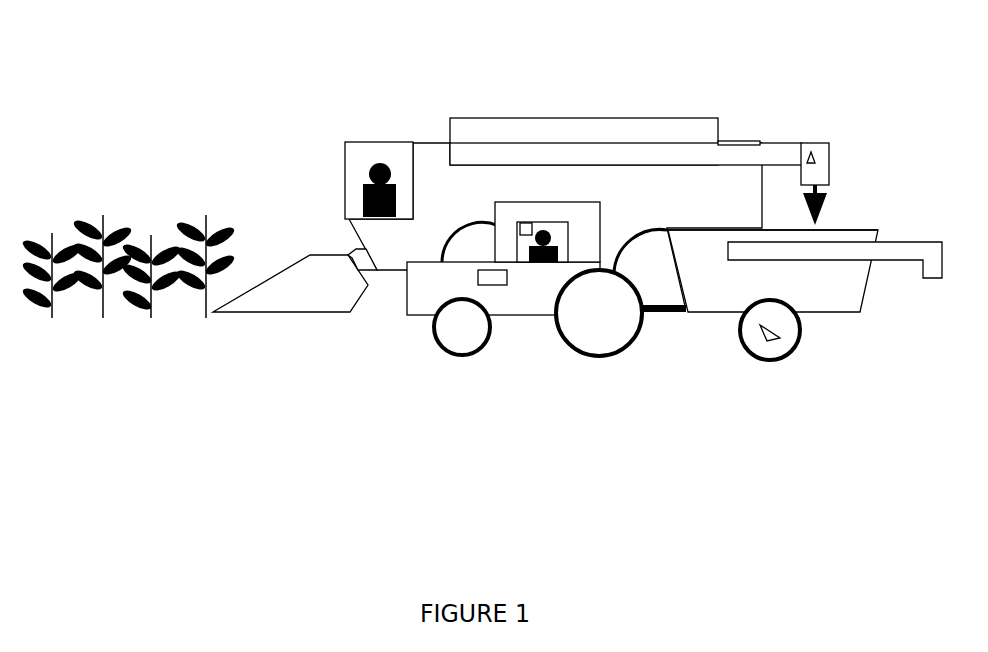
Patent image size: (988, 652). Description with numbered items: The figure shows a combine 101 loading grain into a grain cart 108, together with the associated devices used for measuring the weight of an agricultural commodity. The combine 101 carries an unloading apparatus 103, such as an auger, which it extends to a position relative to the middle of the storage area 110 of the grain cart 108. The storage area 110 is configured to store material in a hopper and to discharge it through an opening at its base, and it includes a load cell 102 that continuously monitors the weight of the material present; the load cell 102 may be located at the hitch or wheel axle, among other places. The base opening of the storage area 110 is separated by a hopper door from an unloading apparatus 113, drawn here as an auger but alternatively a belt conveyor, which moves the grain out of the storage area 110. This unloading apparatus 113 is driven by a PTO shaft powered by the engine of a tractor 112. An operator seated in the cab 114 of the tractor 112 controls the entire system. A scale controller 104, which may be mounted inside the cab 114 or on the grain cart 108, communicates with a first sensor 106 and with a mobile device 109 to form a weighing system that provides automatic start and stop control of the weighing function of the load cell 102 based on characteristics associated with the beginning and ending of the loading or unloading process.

The combine 101 is at (523, 116).
The load cell 102 is at (763, 338).
The unloading apparatus 103 is at (737, 162).
The scale controller 104 is at (478, 286).
The first sensor 106 is at (812, 143).
The grain cart 108 is at (843, 313).
The mobile device 109 is at (520, 224).
The storage area 110 is at (832, 228).
The tractor 112 is at (528, 317).
The unloading apparatus 113 is at (884, 258).
The cab 114 is at (578, 202).